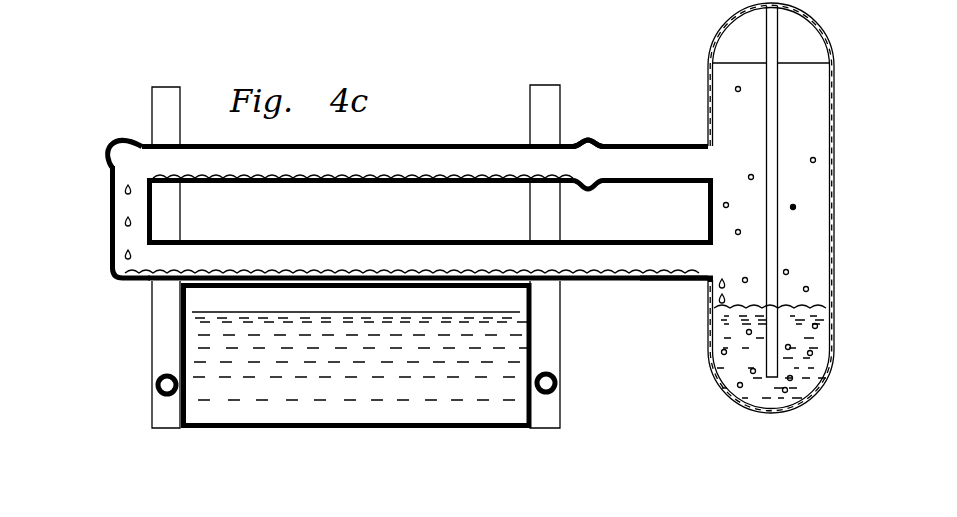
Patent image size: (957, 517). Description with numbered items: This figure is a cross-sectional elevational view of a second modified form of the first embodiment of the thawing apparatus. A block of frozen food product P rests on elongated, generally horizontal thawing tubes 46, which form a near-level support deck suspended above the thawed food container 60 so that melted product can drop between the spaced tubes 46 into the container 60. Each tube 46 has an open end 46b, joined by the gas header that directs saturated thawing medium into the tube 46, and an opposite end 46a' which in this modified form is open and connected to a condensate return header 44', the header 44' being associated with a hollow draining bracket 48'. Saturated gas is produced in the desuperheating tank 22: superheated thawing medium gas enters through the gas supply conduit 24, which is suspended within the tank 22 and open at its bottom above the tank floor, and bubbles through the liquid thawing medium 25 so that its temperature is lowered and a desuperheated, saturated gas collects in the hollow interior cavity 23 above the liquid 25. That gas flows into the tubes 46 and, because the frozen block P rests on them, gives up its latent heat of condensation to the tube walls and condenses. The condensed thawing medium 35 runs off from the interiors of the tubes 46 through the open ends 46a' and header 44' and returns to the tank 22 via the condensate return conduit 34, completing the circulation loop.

The desuperheating tank 22 is at (835, 145).
The hollow interior cavity 23 is at (808, 85).
The gas supply conduit 24 is at (778, 33).
The thawing medium 25 is at (823, 347).
The condensate return conduit 34 is at (633, 232).
The condensed thawing medium 35 is at (678, 283).
The condensate return header 44' is at (94, 152).
The thawing tubes 46 is at (379, 222).
The end of thawing tube 46a' is at (93, 206).
The open end of thawing tube 46b is at (592, 162).
The draining bracket 48' is at (103, 273).
The thawed food container 60 is at (495, 300).
The frozen food product P is at (207, 380).